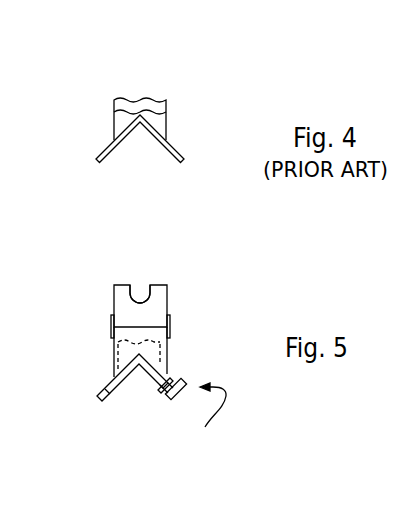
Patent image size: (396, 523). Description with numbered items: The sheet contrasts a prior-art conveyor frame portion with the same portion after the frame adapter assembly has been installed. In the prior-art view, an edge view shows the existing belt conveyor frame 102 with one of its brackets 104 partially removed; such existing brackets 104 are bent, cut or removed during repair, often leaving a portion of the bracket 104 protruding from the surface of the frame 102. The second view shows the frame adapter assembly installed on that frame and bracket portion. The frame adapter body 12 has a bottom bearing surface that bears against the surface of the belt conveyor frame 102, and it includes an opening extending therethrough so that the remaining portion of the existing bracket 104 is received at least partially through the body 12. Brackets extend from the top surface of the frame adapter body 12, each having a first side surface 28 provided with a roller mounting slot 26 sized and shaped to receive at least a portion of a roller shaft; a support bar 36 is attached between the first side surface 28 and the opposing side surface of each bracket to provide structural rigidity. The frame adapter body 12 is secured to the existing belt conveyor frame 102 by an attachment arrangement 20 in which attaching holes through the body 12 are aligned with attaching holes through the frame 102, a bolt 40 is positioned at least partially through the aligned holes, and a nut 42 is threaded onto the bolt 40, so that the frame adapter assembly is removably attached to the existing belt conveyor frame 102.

In FIG. 4, the bracket 104 is at (132, 108).
In FIG. 5, the bracket 104 is at (161, 350).
In FIG. 4, the belt conveyor frame 102 is at (173, 147).
In FIG. 5, the belt conveyor frame 102 is at (118, 382).
In FIG. 5, the frame adapter body 12 is at (108, 373).
In FIG. 5, the attachment arrangement 20 is at (212, 421).
In FIG. 5, the roller mounting slot 26 is at (138, 295).
In FIG. 5, the first side surface 28 is at (124, 302).
In FIG. 5, the support bar 36 is at (169, 318).
In FIG. 5, the bolt 40 is at (183, 377).
In FIG. 5, the nut 42 is at (170, 402).